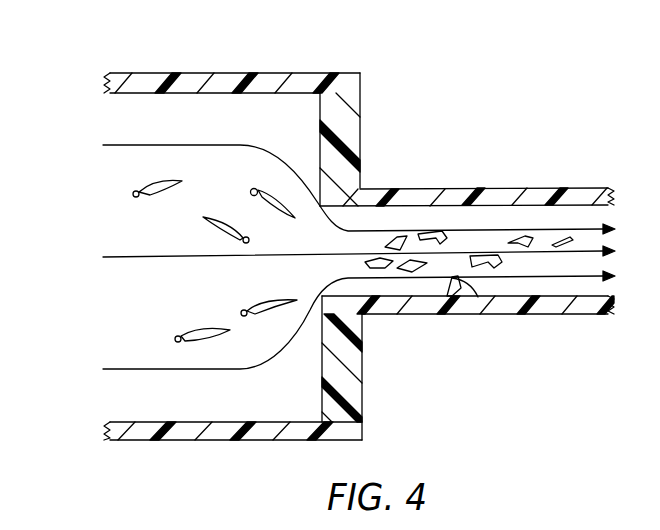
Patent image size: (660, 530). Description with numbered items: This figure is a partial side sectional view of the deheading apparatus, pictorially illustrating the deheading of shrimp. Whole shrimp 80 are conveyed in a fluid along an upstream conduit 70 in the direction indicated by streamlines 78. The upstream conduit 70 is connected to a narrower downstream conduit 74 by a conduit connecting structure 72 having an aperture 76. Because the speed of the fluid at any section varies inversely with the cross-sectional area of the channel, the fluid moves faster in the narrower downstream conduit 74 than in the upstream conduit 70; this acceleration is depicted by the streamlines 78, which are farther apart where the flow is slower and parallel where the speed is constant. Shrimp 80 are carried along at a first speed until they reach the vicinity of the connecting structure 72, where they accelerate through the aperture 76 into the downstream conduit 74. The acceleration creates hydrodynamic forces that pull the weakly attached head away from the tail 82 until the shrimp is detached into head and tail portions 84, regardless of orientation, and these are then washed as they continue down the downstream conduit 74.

The upstream conduit 70 is at (273, 80).
The conduit connecting structure 72 is at (352, 140).
The downstream conduit 74 is at (520, 188).
The aperture 76 is at (378, 292).
The streamlines 78 is at (172, 145).
The whole shrimp 80 is at (268, 190).
The tail 82 is at (362, 268).
The head and tail portions 84 is at (484, 266).